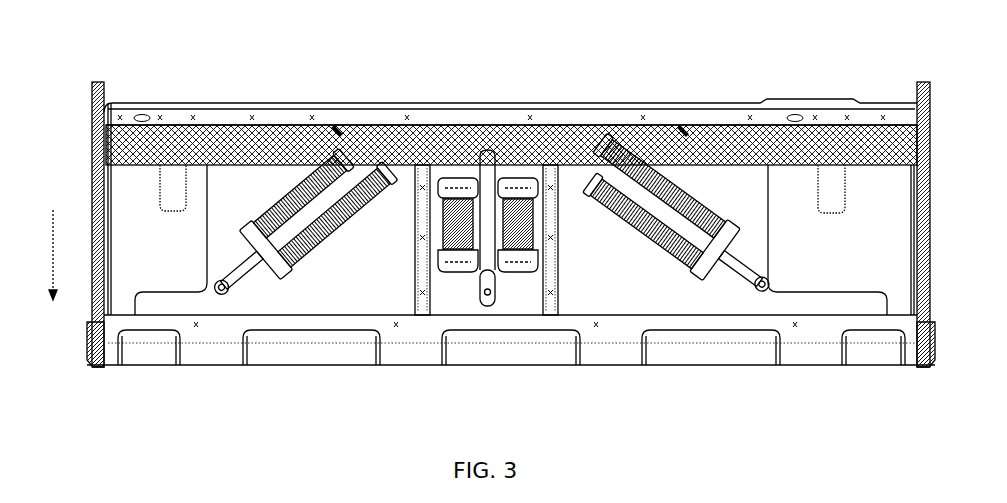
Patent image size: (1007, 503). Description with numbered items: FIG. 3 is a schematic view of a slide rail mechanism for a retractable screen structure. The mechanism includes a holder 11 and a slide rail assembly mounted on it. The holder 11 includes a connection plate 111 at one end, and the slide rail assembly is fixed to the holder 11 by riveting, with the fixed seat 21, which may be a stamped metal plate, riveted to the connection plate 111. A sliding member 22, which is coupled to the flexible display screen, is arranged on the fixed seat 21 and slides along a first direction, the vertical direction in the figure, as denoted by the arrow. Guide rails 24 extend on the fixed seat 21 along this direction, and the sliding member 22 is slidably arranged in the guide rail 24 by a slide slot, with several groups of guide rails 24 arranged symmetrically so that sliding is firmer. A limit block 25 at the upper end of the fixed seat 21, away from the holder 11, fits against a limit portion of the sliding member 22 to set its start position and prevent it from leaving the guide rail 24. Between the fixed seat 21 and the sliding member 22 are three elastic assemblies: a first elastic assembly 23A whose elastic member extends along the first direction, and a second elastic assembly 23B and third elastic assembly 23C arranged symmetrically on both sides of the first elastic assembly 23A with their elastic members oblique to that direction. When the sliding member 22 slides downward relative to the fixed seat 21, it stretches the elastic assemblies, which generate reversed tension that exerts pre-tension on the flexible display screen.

The holder 11 is at (95, 187).
The connection plate 111 is at (487, 115).
The fixed seat 21 is at (349, 292).
The sliding member 22 is at (280, 135).
The first elastic assembly 23A is at (525, 232).
The second elastic assembly 23B is at (295, 233).
The third elastic assembly 23C is at (692, 240).
The guide rail 24 is at (415, 188).
The limit block 25 is at (340, 130).